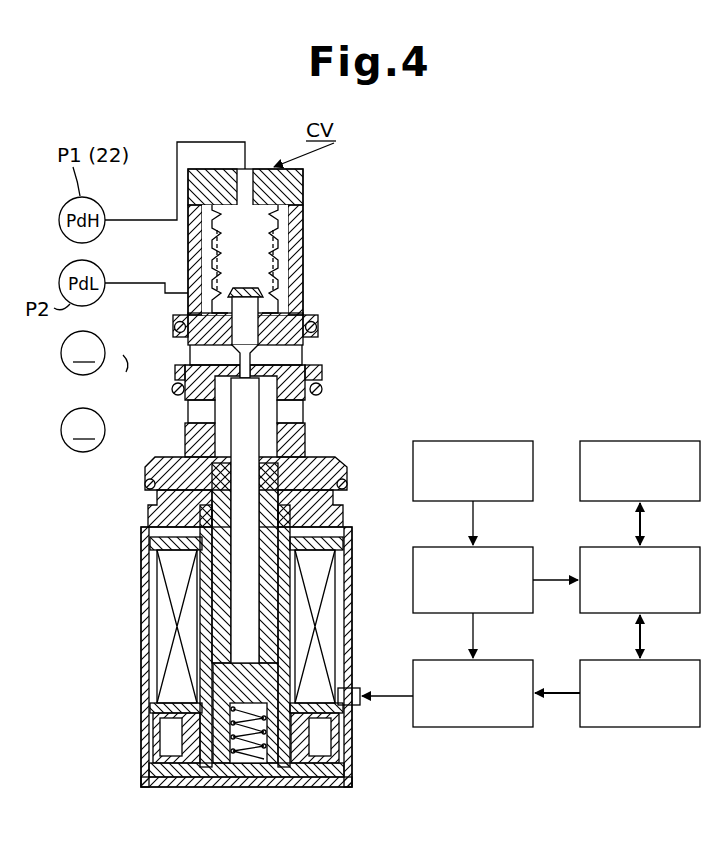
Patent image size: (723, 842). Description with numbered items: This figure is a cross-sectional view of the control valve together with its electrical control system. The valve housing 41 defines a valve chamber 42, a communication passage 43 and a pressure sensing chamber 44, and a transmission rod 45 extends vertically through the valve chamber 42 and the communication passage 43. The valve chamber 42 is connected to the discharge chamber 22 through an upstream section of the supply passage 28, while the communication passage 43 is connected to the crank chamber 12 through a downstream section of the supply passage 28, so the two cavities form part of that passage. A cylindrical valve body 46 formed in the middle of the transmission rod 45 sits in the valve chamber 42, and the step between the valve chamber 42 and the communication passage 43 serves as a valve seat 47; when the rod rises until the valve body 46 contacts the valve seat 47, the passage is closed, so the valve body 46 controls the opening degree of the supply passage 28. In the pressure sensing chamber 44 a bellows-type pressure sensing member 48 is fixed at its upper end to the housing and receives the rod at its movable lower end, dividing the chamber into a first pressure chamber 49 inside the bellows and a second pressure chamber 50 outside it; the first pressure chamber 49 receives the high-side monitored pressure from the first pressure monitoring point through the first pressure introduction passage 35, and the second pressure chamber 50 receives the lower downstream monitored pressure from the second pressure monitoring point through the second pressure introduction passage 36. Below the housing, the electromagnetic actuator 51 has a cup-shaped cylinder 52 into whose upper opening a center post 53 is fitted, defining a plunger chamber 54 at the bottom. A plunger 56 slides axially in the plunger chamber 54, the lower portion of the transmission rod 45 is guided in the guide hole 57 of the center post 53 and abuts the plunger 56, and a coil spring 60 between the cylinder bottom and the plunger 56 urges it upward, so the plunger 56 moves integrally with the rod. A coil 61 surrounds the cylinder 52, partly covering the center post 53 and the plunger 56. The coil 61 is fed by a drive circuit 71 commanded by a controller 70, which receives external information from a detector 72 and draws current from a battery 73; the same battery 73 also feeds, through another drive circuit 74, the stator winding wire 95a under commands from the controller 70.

The crank chamber 12 is at (107, 353).
The discharge chamber 22 is at (186, 430).
The supply passage 28 is at (126, 428).
The first pressure introduction passage 35 is at (126, 219).
The second pressure introduction passage 36 is at (122, 282).
The valve housing 41 is at (292, 377).
The valve chamber 42 is at (272, 420).
The communication passage 43 is at (262, 353).
The pressure sensing chamber 44 is at (283, 237).
The transmission rod 45 is at (258, 452).
The valve body 46 is at (303, 410).
The valve seat 47 is at (176, 383).
The pressure sensing member 48 is at (303, 278).
The first pressure chamber 49 is at (258, 240).
The second pressure chamber 50 is at (205, 306).
The electromagnetic actuator 51 is at (354, 555).
The cylinder 52 is at (300, 527).
The center post 53 is at (328, 470).
The plunger chamber 54 is at (278, 657).
The plunger 56 is at (284, 671).
The guide hole 57 is at (230, 556).
The coil spring 60 is at (238, 752).
The coil 61 is at (333, 593).
The controller 70 is at (512, 547).
The drive circuit 71 is at (512, 660).
The detector 72 is at (512, 441).
The battery 73 is at (682, 660).
The drive circuit 74 is at (682, 547).
The winding wire 95a is at (679, 441).